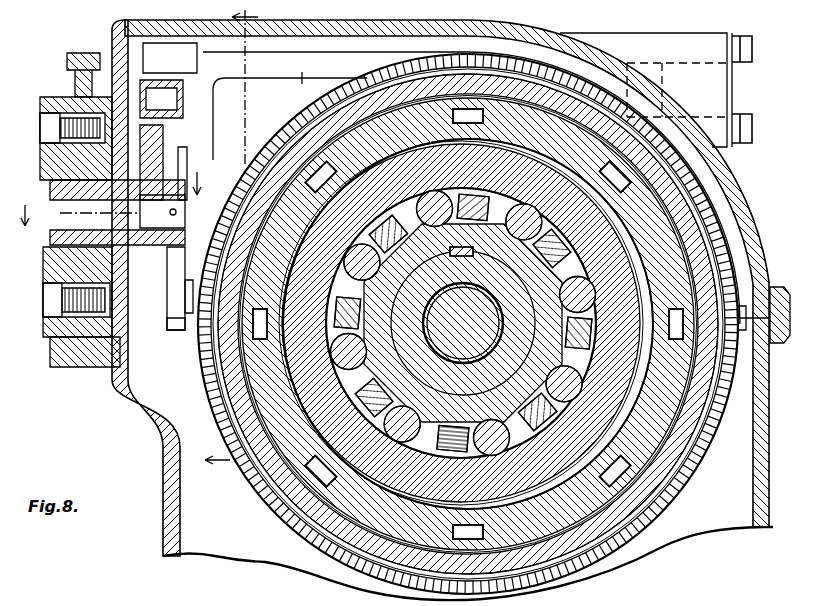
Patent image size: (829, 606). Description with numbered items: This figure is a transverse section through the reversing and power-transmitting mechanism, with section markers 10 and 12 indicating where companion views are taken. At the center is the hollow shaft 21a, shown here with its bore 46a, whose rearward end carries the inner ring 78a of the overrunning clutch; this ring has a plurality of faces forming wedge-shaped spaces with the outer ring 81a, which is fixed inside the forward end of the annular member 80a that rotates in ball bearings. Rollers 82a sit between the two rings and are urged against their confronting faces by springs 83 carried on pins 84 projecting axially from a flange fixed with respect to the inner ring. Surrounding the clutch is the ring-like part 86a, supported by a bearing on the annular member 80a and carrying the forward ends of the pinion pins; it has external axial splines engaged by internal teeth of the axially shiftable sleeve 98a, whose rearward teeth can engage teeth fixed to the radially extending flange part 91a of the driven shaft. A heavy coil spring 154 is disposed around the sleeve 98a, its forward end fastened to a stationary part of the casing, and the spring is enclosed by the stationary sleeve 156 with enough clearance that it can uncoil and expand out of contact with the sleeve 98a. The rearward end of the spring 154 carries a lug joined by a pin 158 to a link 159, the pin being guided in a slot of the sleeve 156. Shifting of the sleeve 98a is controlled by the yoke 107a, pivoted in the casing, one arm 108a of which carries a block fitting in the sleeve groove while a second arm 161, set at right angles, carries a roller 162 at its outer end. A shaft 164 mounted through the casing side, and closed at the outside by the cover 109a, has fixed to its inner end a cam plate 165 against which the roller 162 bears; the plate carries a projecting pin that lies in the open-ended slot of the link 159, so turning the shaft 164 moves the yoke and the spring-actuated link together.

The section line 10- 10 is at (242, 249).
The section line 12- 12 is at (110, 213).
The hollow shaft 21a is at (490, 262).
The shaft 46a is at (463, 323).
The inner ring 78a is at (448, 425).
The annular member 80a is at (448, 252).
The outer ring 81a is at (482, 470).
The roller 82a is at (490, 424).
The spring 83 is at (448, 455).
The pin 84 is at (344, 305).
The ring-like part 86a is at (503, 117).
The radially extending flange part 91a is at (447, 108).
The axially shiftable sleeve 98a is at (660, 440).
The yoke 107a is at (471, 188).
The arm 108a is at (723, 262).
The cover plate 109a is at (200, 122).
The heavy coil spring 154 is at (655, 475).
The stationary sleeve 156 is at (650, 504).
The pin 158 is at (185, 306).
The link 159 is at (172, 291).
The arm 161 is at (190, 88).
The roller 162 is at (132, 70).
The shaft 164 is at (159, 288).
The cam plate 165 is at (188, 158).